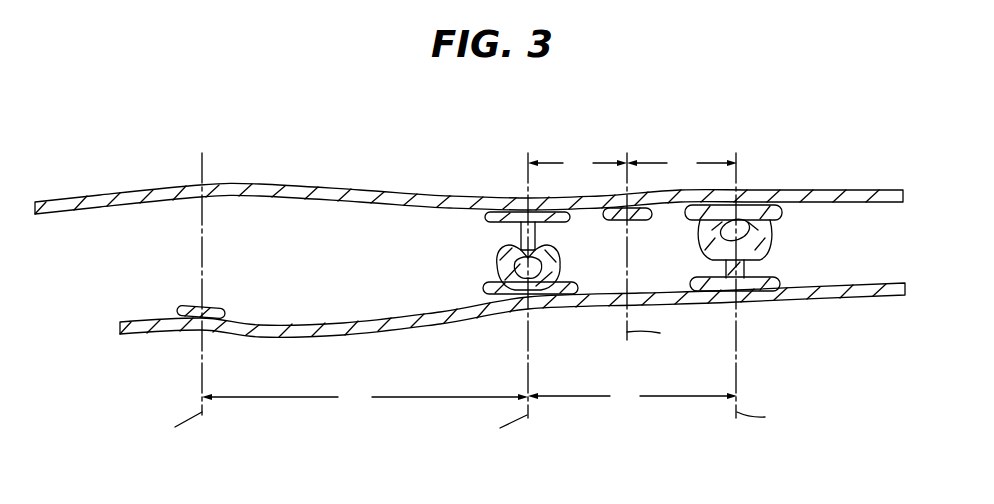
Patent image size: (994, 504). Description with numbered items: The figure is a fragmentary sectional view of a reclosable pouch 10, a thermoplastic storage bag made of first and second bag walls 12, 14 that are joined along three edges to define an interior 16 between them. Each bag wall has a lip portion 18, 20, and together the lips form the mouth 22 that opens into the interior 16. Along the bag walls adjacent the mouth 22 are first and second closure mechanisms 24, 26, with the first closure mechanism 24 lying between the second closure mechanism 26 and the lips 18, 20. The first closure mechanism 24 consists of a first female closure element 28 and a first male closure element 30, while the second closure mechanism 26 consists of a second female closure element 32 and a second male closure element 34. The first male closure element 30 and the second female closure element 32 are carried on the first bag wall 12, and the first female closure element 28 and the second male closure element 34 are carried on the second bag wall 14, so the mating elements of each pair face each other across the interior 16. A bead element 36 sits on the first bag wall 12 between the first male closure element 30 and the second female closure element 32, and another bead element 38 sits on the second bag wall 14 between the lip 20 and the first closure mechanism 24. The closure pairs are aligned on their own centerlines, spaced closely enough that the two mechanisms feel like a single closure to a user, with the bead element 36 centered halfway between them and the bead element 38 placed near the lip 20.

The reclosable pouch 10 is at (339, 153).
The first bag wall 12 is at (858, 190).
The second bag wall 14 is at (860, 297).
The interior 16 is at (877, 254).
The lip portion 18 is at (42, 201).
The lip portion 20 is at (122, 336).
The mouth 22 is at (115, 283).
The first closure mechanism 24 is at (495, 253).
The second closure mechanism 26 is at (767, 242).
The first female closure element 28 is at (557, 292).
The first male closure element 30 is at (512, 220).
The second female closure element 32 is at (758, 208).
The second male closure element 34 is at (770, 290).
The bead element 36 is at (647, 220).
The bead element 38 is at (220, 304).